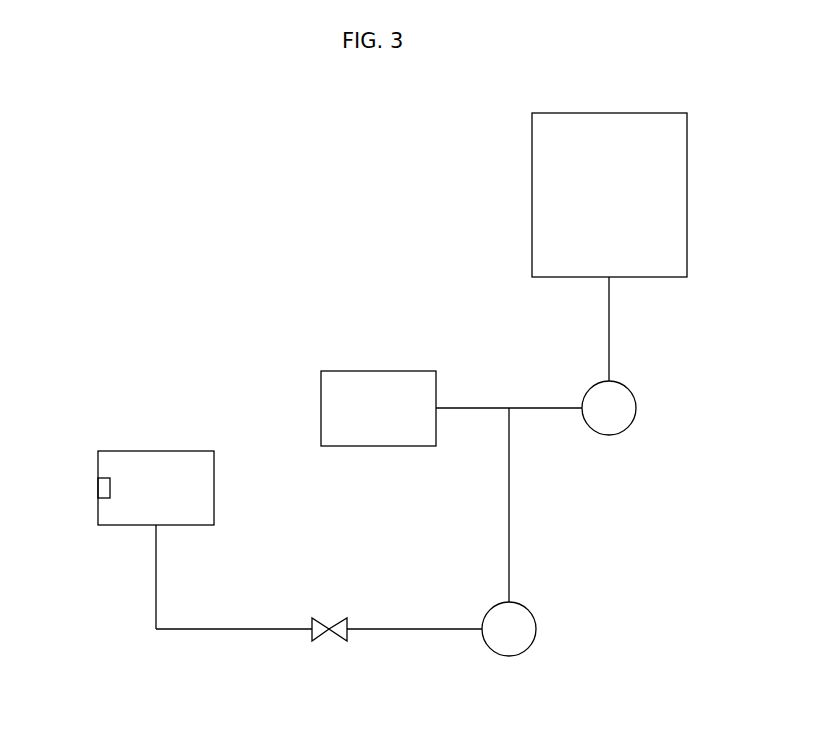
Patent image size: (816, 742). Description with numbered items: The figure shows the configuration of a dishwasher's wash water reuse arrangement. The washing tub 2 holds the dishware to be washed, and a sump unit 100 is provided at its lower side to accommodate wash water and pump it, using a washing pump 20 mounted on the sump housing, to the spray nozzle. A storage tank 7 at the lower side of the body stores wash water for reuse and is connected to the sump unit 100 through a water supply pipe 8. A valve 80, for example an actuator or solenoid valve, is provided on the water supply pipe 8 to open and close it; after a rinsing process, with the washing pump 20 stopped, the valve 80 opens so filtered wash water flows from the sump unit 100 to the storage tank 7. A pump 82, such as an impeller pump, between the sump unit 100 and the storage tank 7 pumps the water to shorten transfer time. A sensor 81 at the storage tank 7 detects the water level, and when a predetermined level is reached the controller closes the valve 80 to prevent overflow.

The washing tub 2 is at (621, 201).
The washing pump 20 is at (630, 408).
The sump unit 100 is at (348, 380).
The pump 82 is at (528, 627).
The storage tank 7 is at (128, 460).
The sensor 81 is at (98, 488).
The water supply pipe 8 is at (226, 630).
The valve 80 is at (339, 632).